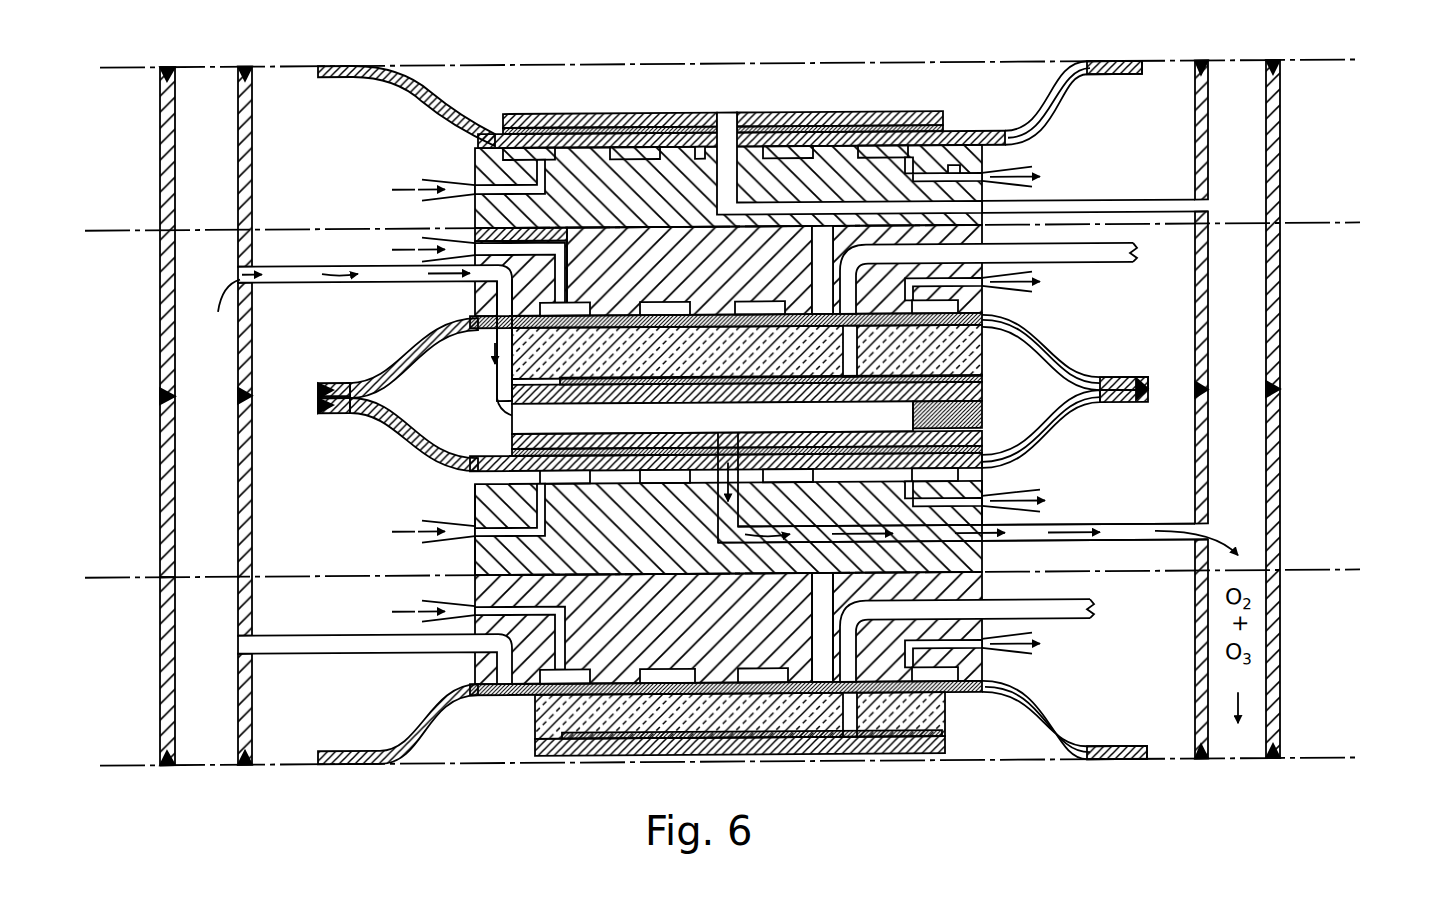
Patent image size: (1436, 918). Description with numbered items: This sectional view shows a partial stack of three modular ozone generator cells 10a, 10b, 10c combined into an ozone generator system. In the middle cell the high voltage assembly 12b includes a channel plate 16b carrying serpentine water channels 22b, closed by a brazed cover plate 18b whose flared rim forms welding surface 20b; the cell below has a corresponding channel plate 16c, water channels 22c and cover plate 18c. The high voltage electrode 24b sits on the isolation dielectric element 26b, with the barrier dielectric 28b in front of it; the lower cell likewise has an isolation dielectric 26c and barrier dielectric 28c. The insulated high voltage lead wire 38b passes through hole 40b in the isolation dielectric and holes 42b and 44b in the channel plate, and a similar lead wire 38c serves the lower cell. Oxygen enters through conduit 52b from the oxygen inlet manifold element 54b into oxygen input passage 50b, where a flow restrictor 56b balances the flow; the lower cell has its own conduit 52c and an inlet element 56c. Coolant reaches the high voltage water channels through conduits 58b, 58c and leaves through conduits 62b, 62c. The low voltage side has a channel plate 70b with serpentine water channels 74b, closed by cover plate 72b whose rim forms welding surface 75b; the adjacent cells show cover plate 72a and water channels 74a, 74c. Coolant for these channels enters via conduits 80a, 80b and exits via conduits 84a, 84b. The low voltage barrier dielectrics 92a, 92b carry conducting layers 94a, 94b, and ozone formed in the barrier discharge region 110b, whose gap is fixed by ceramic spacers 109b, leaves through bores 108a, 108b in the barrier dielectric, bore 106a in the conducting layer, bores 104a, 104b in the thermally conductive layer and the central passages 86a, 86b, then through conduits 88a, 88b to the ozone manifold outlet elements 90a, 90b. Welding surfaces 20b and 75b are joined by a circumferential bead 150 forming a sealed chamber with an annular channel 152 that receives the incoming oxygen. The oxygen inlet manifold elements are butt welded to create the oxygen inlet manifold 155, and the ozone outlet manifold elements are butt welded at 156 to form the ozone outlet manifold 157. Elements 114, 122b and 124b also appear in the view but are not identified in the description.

The ozone generator cell 10a is at (1328, 168).
The ozone generator cell 10b is at (1322, 424).
The ozone generator cell 10c is at (1320, 664).
The high voltage assembly 12b is at (1080, 343).
The channel plate 16b is at (632, 243).
The channel plate 16c is at (742, 635).
The cover plate 18b is at (398, 362).
The cover plate 18c is at (400, 736).
The welding surface 20b is at (343, 386).
The serpentine water channels 22b is at (600, 302).
The serpentine water channels 22c is at (648, 650).
The high voltage electrode 24b is at (747, 352).
The high voltage isolation dielectric element 26b is at (927, 368).
The high voltage isolation dielectric element 26c is at (947, 718).
The barrier dielectric 28b is at (947, 395).
The barrier dielectric 28c is at (947, 750).
The insulated high voltage lead wire 38b is at (1113, 270).
The insulated high voltage lead wire 38c is at (1085, 608).
The hole 40b is at (700, 368).
The hole 42b is at (843, 238).
The hole 44b is at (955, 172).
The oxygen input passage 50b is at (500, 310).
The conduit 52b is at (353, 334).
The conduit 52c is at (353, 655).
The oxygen inlet manifold element 54b is at (160, 298).
The flow restrictor 56b is at (500, 333).
The water inlet element 56c is at (162, 650).
The conduit 58b is at (425, 262).
The conduit 58c is at (448, 618).
The conduit 62b is at (1022, 303).
The conduit 62c is at (1040, 665).
The channel plate 70b is at (474, 484).
The cover plate 72a is at (1045, 93).
The cover plate 72b is at (405, 432).
The serpentine water channels 74a is at (583, 118).
The serpentine water channels 74b is at (843, 478).
The serpentine water channels 74c is at (595, 486).
The welding surface 75b is at (345, 412).
The conduit 80a is at (420, 182).
The conduit 80b is at (445, 545).
The conduit 84a is at (1026, 178).
The conduit 84b is at (1055, 500).
The ozone outlet passage 86a is at (792, 203).
The ozone outlet passage 86b is at (835, 454).
The conduit 88a is at (1153, 205).
The conduit 88b is at (1152, 528).
The ozone manifold outlet element 90a is at (1281, 137).
The ozone manifold outlet element 90b is at (1282, 504).
The barrier dielectric 92a is at (912, 112).
The barrier dielectric 92b is at (512, 442).
The conducting layer 94a is at (482, 137).
The conducting layer 94b is at (975, 445).
The bore 104a is at (700, 160).
The bore 104b is at (716, 512).
The bore 106a is at (706, 160).
The bore 108a is at (724, 132).
The bore 108b is at (717, 437).
The ceramic spacers 109b is at (978, 406).
The barrier discharge region 110b is at (887, 435).
The separator plate 114 is at (568, 261).
The cooling block 122b is at (520, 508).
The block side wall 124b is at (982, 484).
The circumferential bead 150 is at (322, 399).
The annular channel 152 is at (448, 405).
The oxygen inlet manifold 155 is at (209, 66).
The butt weld 156 is at (1281, 394).
The ozone outlet manifold 157 is at (1240, 86).